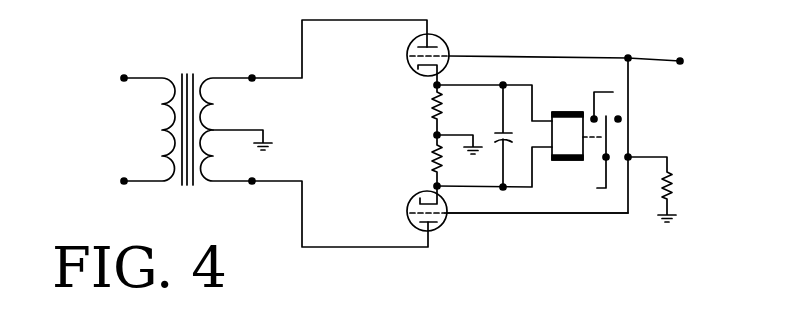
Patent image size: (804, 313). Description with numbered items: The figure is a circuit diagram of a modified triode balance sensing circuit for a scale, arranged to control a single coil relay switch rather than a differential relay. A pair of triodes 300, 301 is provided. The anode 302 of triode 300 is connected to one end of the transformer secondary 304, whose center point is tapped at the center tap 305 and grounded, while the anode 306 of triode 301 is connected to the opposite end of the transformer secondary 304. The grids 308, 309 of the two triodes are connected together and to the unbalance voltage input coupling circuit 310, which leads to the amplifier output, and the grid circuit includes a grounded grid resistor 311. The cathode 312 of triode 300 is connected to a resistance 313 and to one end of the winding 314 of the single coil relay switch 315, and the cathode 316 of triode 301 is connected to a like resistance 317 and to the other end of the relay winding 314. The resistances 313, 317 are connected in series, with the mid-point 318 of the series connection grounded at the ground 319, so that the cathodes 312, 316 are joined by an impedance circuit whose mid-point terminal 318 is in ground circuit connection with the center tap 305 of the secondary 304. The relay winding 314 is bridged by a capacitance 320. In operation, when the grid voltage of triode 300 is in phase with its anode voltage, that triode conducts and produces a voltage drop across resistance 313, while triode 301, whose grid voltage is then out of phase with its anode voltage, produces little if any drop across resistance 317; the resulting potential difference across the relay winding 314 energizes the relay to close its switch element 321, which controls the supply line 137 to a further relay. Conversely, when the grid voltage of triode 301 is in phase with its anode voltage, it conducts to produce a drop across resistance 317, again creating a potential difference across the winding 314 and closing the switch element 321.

The triode 300 is at (426, 61).
The triode 301 is at (426, 221).
The anode 302 is at (414, 40).
The transformer secondary 304 is at (203, 120).
The center tap 305 is at (214, 130).
The anode 306 is at (420, 224).
The grid 308 is at (411, 59).
The grid 309 is at (410, 207).
The unbalance voltage input coupling circuit 310 is at (656, 63).
The grid resistor 311 is at (672, 180).
The cathode 312 is at (421, 69).
The resistance 313 is at (443, 94).
The relay winding 314 is at (584, 111).
The single coil relay switch 315 is at (566, 150).
The cathode 316 is at (423, 194).
The resistance 317 is at (436, 160).
The mid-point 318 is at (436, 136).
The ground 319 is at (481, 122).
The capacitance 320 is at (500, 143).
The switch element 321 is at (607, 142).
The supply line 137 is at (613, 92).